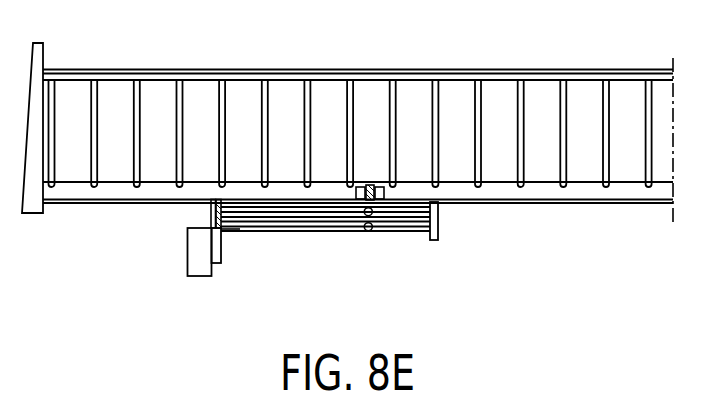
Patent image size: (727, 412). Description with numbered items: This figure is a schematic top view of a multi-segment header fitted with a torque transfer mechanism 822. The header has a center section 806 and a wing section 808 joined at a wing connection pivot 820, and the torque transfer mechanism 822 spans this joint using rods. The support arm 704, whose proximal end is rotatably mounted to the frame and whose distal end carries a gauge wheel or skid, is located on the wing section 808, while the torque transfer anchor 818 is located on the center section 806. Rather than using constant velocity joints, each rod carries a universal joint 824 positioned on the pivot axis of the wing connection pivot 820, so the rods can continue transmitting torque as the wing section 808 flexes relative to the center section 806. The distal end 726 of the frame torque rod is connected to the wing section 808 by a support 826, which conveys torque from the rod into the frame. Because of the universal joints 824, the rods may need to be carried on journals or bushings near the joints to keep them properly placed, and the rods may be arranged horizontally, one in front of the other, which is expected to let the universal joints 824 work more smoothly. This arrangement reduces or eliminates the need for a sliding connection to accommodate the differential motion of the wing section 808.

The support arm 704 is at (187, 254).
The distal end of the frame torque rod 726 is at (232, 226).
The center section 806 is at (549, 223).
The wing section 808 is at (99, 222).
The torque transfer anchor 818 is at (438, 220).
The wing connection pivot 820 is at (369, 184).
The torque transfer mechanism 822 is at (323, 258).
The universal joint 824 is at (370, 229).
The support 826 is at (218, 204).